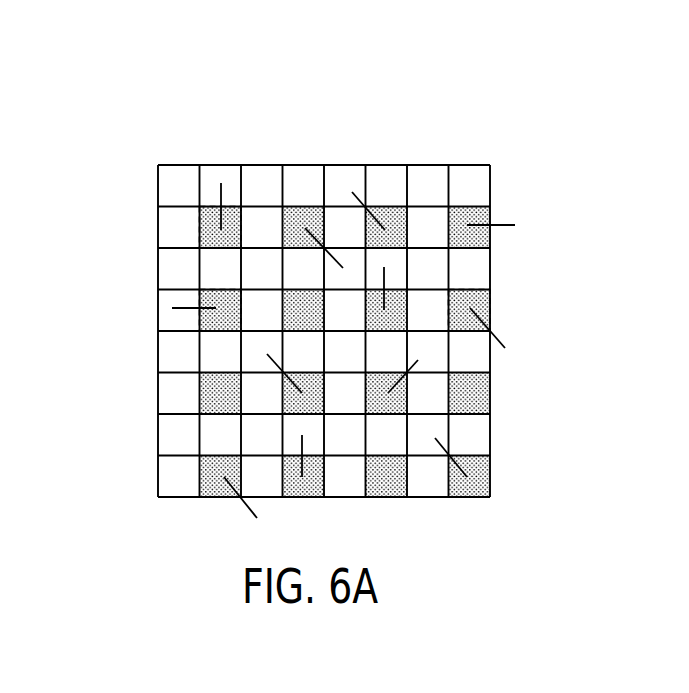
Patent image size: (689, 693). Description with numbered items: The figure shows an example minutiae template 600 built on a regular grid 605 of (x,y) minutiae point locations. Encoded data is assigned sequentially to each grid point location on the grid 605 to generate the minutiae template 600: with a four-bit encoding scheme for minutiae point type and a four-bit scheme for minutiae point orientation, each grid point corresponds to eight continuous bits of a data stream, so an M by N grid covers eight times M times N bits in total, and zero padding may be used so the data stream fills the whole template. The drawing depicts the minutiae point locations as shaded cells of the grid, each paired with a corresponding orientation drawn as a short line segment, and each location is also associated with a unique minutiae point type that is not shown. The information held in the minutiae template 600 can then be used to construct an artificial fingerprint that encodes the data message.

The minutiae template 600 is at (137, 115).
The grid 605 is at (158, 435).